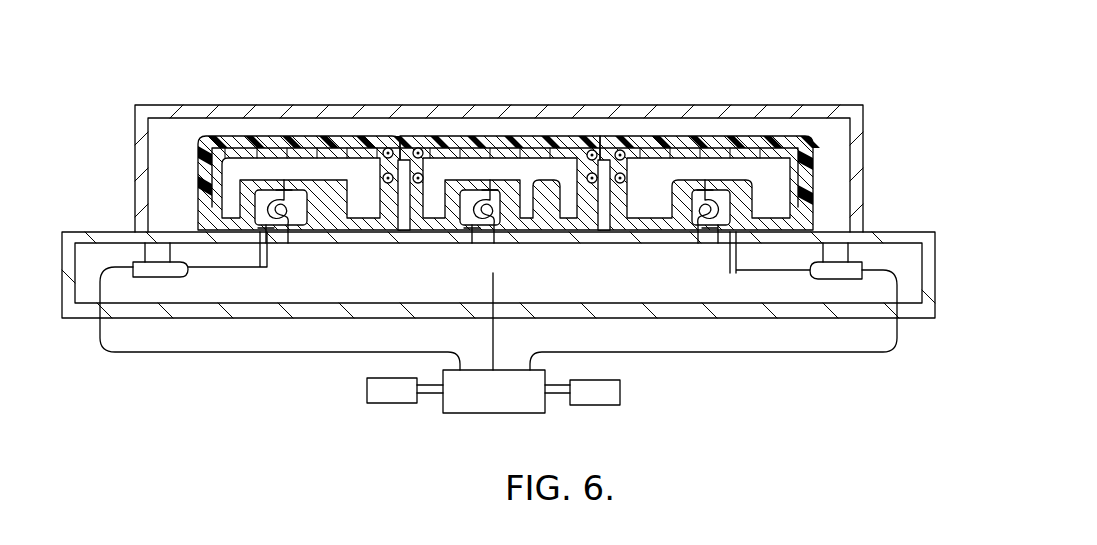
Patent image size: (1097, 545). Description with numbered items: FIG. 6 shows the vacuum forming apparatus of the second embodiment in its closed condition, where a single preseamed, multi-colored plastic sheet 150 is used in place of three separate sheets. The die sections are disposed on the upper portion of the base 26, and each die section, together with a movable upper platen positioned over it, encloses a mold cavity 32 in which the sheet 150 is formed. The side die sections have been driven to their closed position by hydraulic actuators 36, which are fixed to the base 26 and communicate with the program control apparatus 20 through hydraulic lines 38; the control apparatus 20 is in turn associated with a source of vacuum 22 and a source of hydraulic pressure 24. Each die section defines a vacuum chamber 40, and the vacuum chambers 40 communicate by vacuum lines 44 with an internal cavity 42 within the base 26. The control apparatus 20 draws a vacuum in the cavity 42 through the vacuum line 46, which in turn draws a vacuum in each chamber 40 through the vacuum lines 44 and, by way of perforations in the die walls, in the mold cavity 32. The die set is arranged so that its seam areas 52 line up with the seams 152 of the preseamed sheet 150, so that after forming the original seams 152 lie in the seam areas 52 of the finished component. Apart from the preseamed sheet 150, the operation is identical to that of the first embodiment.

The program control apparatus 20 is at (477, 398).
The source of vacuum 22 is at (613, 402).
The source of hydraulic pressure 24 is at (378, 402).
The base 26 is at (928, 310).
The mold cavity 32 is at (190, 191).
The hydraulic actuators 36 is at (140, 263).
The hydraulic lines 38 is at (196, 353).
The vacuum chamber 40 is at (768, 200).
The internal cavity 42 is at (547, 284).
The vacuum lines 44 is at (284, 228).
The vacuum line 46 is at (493, 333).
The seam areas 52 is at (403, 172).
The plastic sheet 150 is at (258, 136).
The seams 152 is at (408, 200).